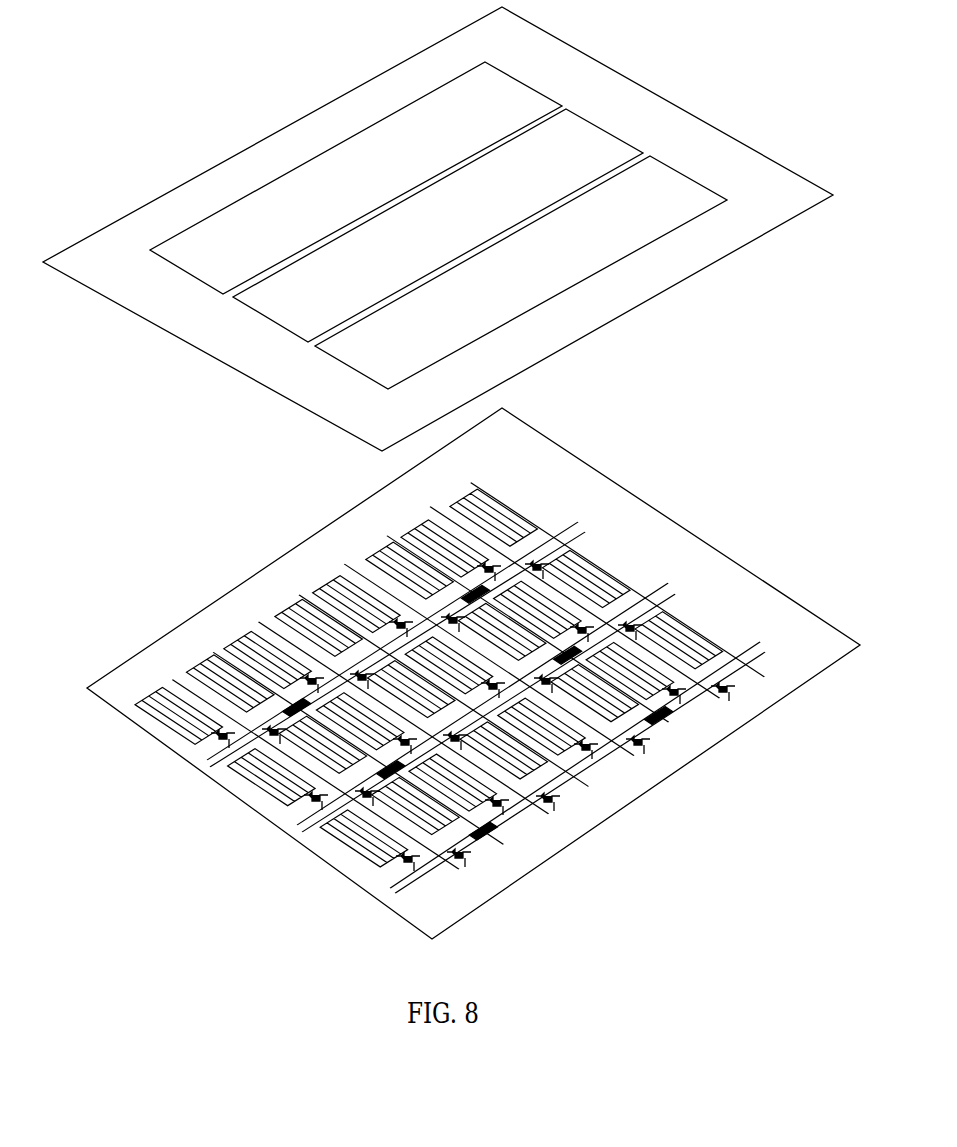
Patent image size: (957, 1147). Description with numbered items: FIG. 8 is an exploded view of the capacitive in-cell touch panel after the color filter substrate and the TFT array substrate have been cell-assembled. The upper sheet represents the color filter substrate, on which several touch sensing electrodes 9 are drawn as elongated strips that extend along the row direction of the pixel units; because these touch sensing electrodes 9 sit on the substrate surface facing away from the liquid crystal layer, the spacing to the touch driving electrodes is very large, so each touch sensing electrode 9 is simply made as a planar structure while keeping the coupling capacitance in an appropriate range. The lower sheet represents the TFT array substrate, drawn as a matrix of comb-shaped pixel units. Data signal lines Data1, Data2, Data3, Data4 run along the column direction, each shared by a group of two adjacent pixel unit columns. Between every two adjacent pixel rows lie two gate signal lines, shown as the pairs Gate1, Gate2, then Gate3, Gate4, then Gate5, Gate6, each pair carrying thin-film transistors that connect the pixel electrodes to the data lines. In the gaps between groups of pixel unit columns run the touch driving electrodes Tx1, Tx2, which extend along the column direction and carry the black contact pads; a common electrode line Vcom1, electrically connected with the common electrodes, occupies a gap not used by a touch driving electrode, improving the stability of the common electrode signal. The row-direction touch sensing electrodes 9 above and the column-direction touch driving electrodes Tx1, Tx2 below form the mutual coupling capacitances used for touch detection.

The touch sensing electrode 9 is at (510, 192).
The data line Data 1 Data1 is at (298, 759).
The data line Data 2 Data2 is at (386, 707).
The data line Data 3 Data3 is at (474, 651).
The data line Data 4 Data4 is at (558, 589).
The touch transmit line Tx 1 Tx1 is at (368, 762).
The touch transmit line Tx 2 Tx2 is at (543, 645).
The common voltage line Vcom 1 Vcom1 is at (459, 707).
The gate line Gate1 is at (406, 623).
The gate line Gate2 is at (416, 633).
The gate line Gate3 is at (494, 687).
The gate line Gate4 is at (504, 699).
The gate line Gate5 is at (587, 749).
The gate line Gate6 is at (597, 759).